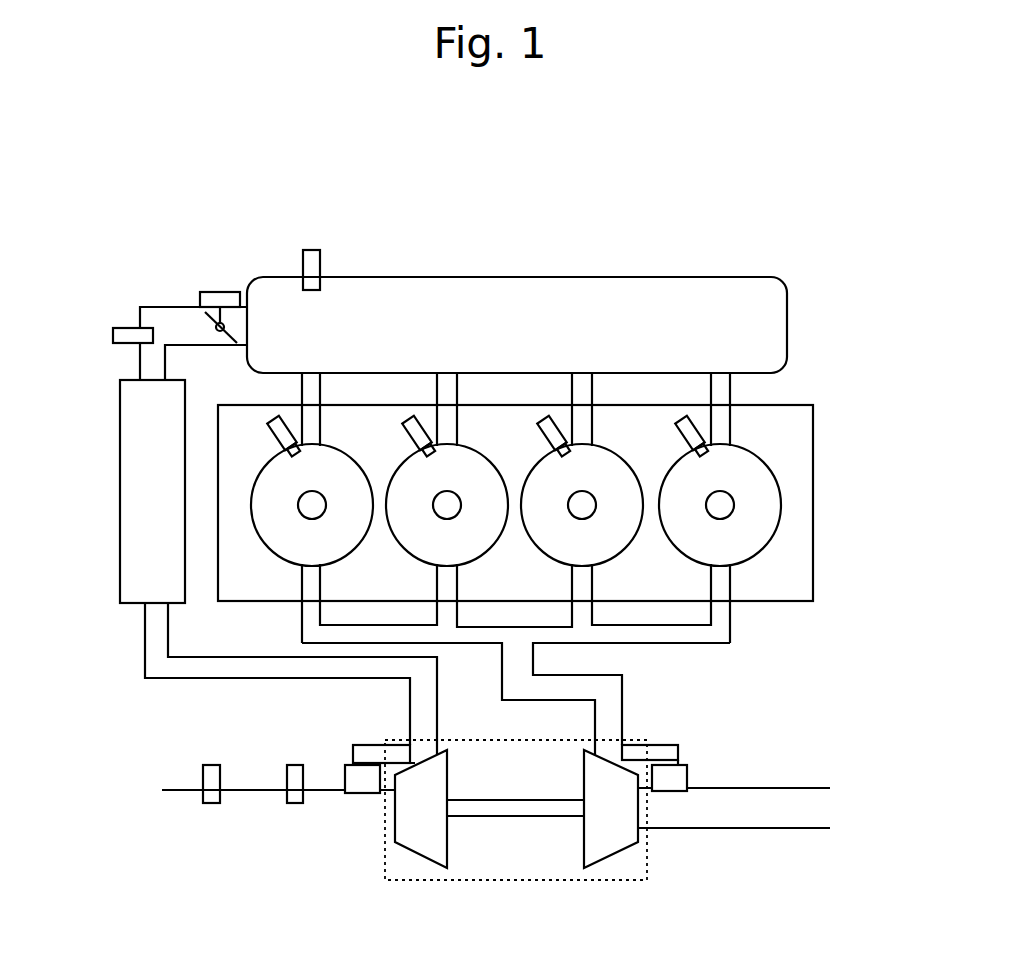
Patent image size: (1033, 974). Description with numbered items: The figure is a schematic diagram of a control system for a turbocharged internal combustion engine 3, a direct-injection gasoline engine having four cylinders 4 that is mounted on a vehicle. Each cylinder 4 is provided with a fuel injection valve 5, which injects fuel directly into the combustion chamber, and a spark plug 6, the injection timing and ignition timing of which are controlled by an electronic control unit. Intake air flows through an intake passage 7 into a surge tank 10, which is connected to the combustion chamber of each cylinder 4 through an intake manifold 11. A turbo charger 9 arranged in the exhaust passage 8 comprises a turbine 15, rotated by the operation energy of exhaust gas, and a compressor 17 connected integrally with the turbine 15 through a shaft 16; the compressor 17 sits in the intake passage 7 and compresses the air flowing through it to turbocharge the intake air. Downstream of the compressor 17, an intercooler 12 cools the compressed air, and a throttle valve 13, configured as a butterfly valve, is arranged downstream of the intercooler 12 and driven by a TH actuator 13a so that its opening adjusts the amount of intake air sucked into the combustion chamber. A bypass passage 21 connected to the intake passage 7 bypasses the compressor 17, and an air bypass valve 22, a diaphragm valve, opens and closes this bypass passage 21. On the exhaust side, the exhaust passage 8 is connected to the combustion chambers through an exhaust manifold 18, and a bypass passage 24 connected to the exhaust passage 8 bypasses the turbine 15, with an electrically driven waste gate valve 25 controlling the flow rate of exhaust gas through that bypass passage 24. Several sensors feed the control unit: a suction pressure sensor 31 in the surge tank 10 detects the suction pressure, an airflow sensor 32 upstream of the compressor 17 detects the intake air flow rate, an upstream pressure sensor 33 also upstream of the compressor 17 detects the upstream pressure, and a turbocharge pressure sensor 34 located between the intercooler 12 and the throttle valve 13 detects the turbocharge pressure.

The internal combustion engine 3 is at (790, 278).
The cylinder 4 is at (330, 448).
The fuel injection valve 5 is at (272, 432).
The spark plug 6 is at (300, 495).
The intake passage 7 is at (256, 678).
The exhaust passage 8 is at (622, 712).
The turbo charger 9 is at (385, 862).
The surge tank 10 is at (460, 277).
The intake manifold 11 is at (302, 392).
The intercooler 12 is at (120, 473).
The throttle valve 13 is at (203, 313).
The TH actuator 13a is at (210, 292).
The turbine 15 is at (618, 850).
The shaft 16 is at (505, 800).
The compressor 17 is at (408, 850).
The exhaust manifold 18 is at (302, 628).
The bypass passage 21 is at (376, 745).
The air bypass valve 22 is at (352, 765).
The bypass passage 24 is at (680, 747).
The waste gate valve 25 is at (688, 776).
The suction pressure sensor 31 is at (308, 250).
The airflow sensor 32 is at (210, 765).
The upstream pressure sensor 33 is at (296, 765).
The turbocharge pressure sensor 34 is at (118, 328).